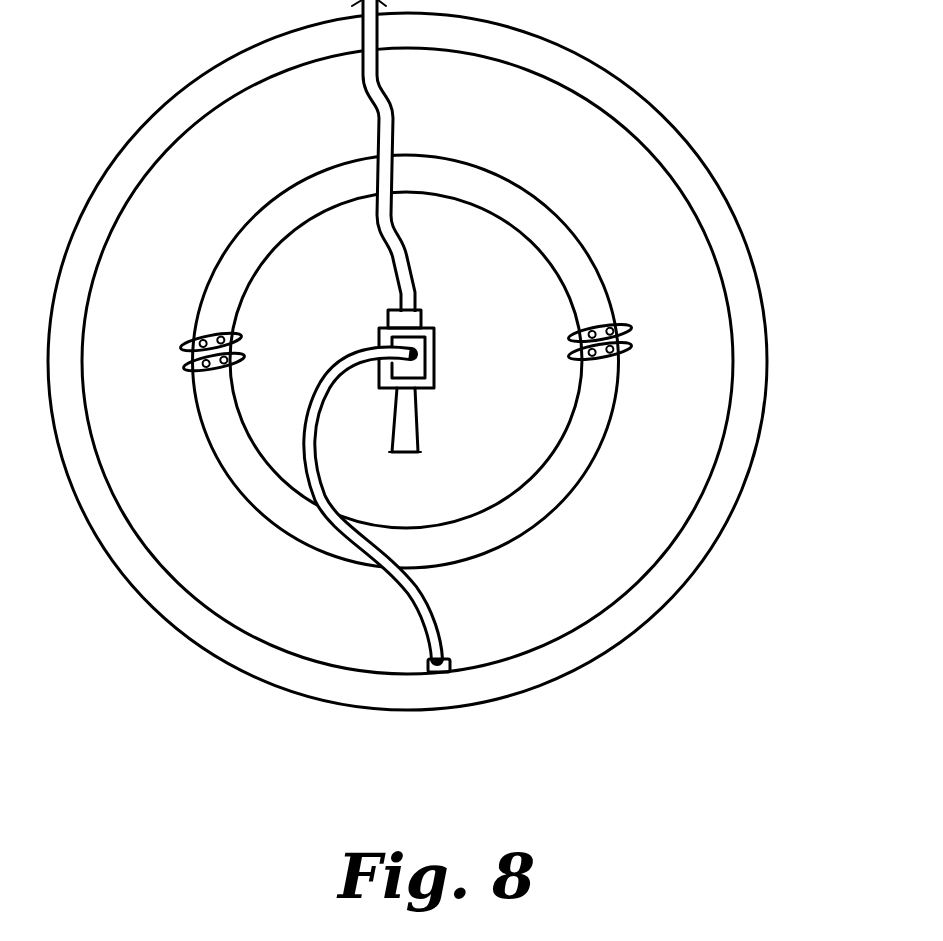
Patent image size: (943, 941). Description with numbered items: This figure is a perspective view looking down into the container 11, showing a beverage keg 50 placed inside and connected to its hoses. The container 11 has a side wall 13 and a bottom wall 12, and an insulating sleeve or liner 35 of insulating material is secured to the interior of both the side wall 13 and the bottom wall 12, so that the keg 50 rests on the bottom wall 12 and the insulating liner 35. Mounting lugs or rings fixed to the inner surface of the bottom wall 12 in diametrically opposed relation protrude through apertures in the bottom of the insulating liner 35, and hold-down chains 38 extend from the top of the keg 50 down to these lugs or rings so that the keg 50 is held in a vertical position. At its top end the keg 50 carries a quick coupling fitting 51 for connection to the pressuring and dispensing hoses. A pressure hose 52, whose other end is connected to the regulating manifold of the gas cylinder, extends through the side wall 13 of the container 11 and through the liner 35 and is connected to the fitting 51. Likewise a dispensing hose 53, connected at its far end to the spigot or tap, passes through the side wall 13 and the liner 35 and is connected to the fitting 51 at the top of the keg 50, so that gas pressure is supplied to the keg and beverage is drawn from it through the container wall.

The container 11 is at (442, 361).
The bottom wall 12 is at (232, 602).
The side wall 13 is at (758, 430).
The insulating liner 35 is at (160, 157).
The hold-down chains 38 is at (203, 335).
The beverage keg 50 is at (450, 381).
The quick coupling fitting 51 is at (433, 357).
The pressure hose 52 is at (395, 110).
The dispensing hose 53 is at (438, 610).